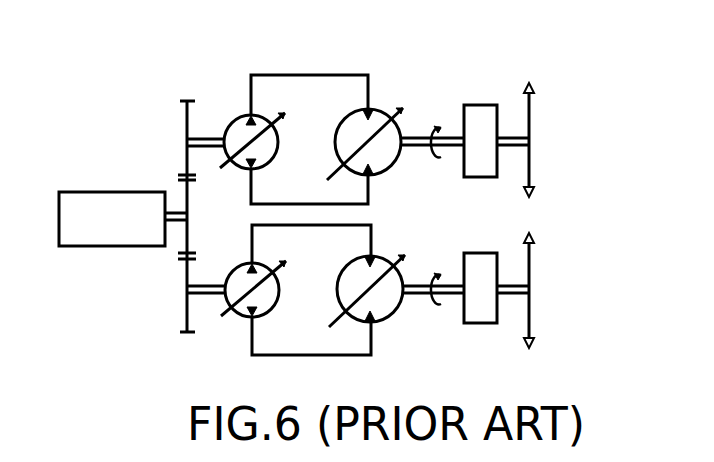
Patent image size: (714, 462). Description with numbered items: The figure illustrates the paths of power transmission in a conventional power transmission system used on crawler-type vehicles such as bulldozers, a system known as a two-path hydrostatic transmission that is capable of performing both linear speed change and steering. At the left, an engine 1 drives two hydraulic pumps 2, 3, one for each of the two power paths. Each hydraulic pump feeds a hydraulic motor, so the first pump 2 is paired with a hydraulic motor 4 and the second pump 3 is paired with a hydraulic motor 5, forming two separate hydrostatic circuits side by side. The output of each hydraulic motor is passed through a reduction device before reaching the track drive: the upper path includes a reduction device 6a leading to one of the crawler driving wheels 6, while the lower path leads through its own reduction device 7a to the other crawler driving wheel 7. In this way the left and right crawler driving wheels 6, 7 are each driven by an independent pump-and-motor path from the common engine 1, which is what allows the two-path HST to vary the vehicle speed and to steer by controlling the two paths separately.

The engine 1 is at (92, 192).
The hydraulic pump 2 is at (237, 118).
The hydraulic pump 3 is at (235, 312).
The hydraulic motor 4 is at (378, 108).
The hydraulic motor 5 is at (402, 317).
The crawler driving wheel 6 is at (531, 108).
The reduction device 6a is at (480, 105).
The crawler driving wheel 7 is at (532, 315).
The second reduction gear 7a is at (478, 323).